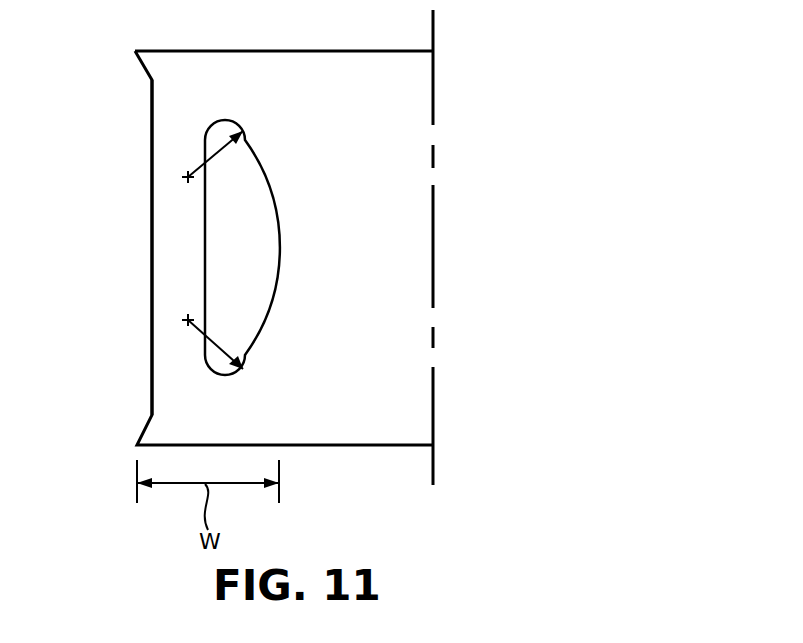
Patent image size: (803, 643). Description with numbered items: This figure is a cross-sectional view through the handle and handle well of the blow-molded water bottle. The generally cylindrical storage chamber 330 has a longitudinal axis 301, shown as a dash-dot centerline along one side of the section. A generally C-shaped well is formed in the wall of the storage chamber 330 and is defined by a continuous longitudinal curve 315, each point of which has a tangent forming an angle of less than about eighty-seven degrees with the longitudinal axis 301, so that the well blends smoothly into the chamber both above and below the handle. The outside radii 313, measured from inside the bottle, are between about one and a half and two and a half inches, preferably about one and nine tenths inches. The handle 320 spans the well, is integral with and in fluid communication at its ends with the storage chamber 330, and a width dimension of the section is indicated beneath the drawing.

The longitudinal axis 301 is at (434, 245).
The outside radii 313 is at (218, 155).
The continuous longitudinal curve 315 is at (281, 246).
The handle 320 is at (168, 255).
The generally cylindrical storage chamber 330 is at (392, 102).